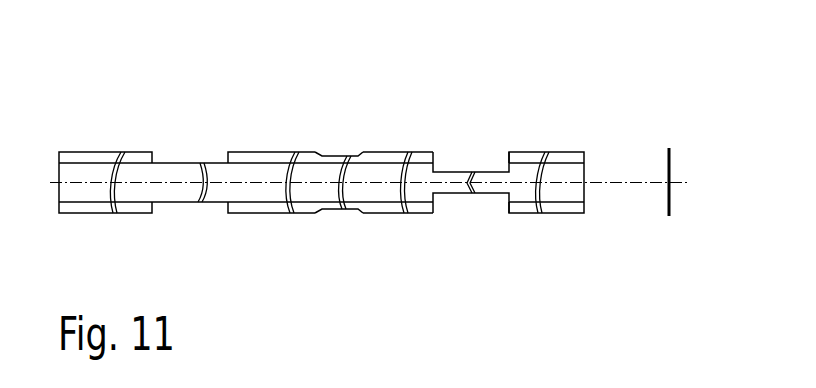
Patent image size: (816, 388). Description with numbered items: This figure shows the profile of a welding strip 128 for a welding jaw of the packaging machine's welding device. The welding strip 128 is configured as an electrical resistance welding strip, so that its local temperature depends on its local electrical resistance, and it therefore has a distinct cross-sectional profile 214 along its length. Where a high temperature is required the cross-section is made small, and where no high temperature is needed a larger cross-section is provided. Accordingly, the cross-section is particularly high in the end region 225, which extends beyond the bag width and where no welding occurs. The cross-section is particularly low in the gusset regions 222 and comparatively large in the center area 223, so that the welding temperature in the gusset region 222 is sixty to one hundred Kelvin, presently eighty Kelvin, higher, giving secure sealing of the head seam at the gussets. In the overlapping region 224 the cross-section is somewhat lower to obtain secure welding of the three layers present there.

The welding strip 128 is at (103, 90).
The cross-sectional profile 214 is at (671, 148).
The gusset region 222 is at (192, 153).
The center area 223 is at (275, 150).
The overlapping region 224 is at (343, 152).
The end region 225 is at (127, 150).